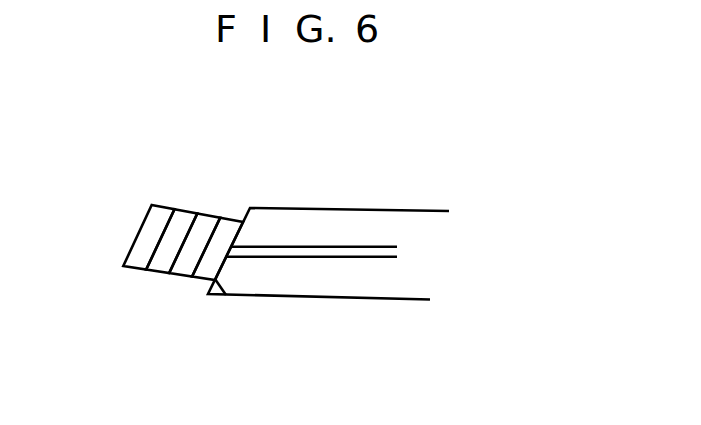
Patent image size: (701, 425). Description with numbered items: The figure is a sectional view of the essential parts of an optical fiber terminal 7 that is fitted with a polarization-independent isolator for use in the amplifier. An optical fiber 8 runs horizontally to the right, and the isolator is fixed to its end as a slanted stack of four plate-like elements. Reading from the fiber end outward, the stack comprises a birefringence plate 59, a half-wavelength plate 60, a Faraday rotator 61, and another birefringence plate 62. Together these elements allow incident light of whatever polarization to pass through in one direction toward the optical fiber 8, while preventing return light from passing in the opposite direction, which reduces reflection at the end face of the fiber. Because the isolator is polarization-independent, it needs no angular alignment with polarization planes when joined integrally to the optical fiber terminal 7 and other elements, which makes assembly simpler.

The optical fiber terminal 7 is at (400, 209).
The optical fiber 8 is at (264, 248).
The birefringence plate 59 is at (210, 265).
The ½-wavelength plate 60 is at (184, 263).
The Faraday rotator 61 is at (157, 262).
The birefringence plate 62 is at (135, 254).